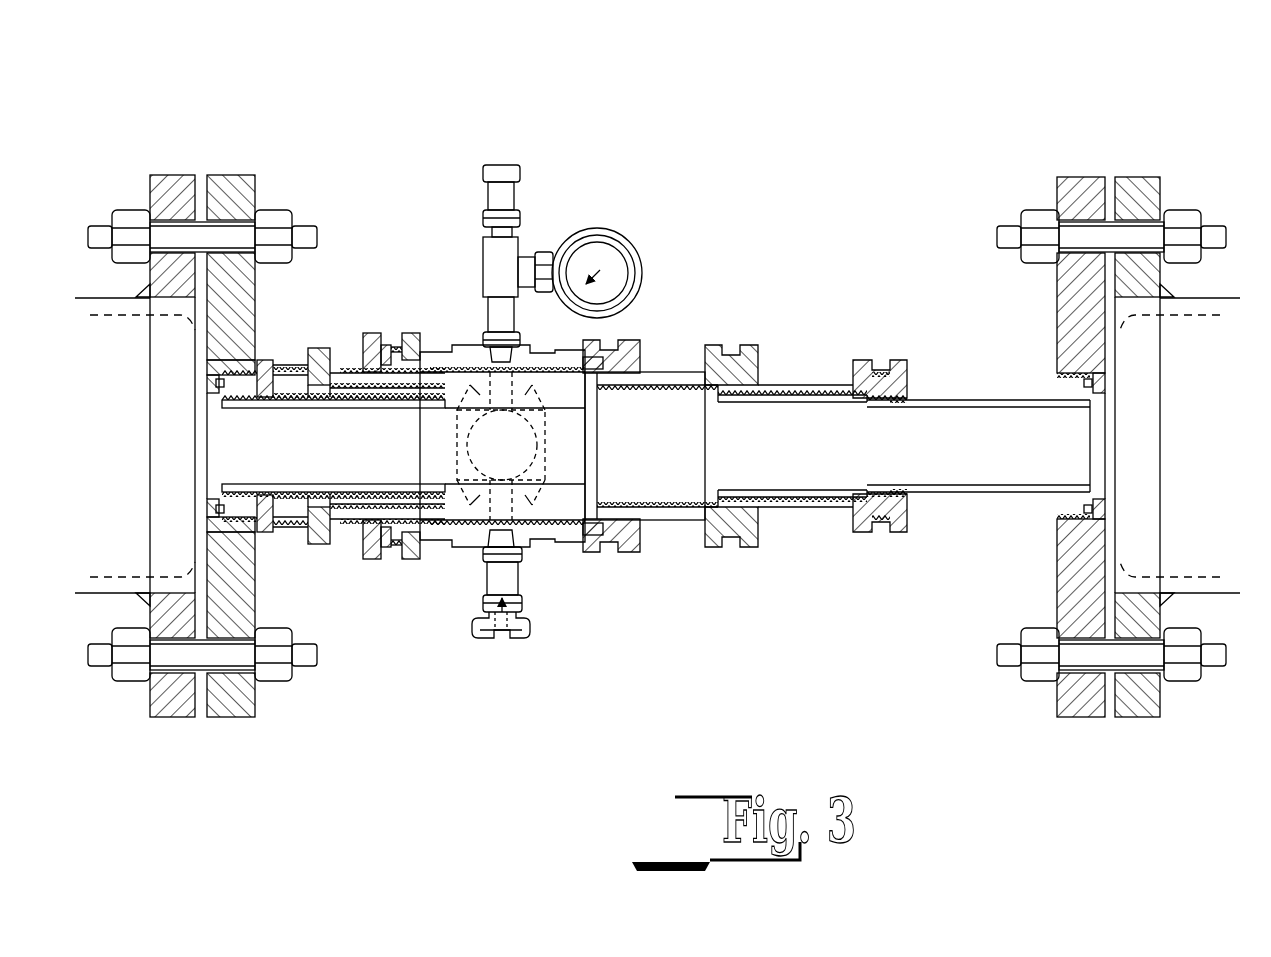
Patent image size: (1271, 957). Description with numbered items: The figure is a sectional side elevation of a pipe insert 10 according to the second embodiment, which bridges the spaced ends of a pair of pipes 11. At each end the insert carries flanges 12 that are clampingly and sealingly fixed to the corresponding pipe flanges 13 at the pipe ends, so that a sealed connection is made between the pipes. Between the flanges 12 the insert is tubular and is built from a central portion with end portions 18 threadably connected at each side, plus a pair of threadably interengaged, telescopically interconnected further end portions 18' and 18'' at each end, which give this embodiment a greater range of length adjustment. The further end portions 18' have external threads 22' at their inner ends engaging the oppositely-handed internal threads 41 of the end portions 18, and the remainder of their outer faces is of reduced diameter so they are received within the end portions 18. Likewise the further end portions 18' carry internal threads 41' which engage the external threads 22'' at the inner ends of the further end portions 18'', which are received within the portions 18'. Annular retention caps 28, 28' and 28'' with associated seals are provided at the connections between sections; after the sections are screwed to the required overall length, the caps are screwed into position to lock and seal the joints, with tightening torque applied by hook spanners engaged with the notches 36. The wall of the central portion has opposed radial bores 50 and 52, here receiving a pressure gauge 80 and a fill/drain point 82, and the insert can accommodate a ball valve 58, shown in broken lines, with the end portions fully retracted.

The pipe insert 10 is at (537, 560).
The pipes 11 is at (180, 722).
The flanges 12 is at (232, 198).
The pipe flanges 13 is at (175, 198).
The end portions 18 is at (558, 432).
The further end portions 18' is at (584, 460).
The further end portions 18'' is at (624, 464).
The external threads 22' is at (544, 446).
The external threads 22'' is at (656, 446).
The annular retention cap 28 is at (522, 457).
The annular retention cap 28' is at (538, 473).
The annular retention cap 28'' is at (587, 474).
The notches 36 is at (437, 358).
The internal threads 41 is at (547, 325).
The internal threads 41' is at (697, 558).
The radial bore 50 is at (460, 346).
The radial bore 52 is at (530, 558).
The ball valve 58 is at (478, 440).
The pressure gauge 80 is at (518, 258).
The fill/drain point 82 is at (503, 555).